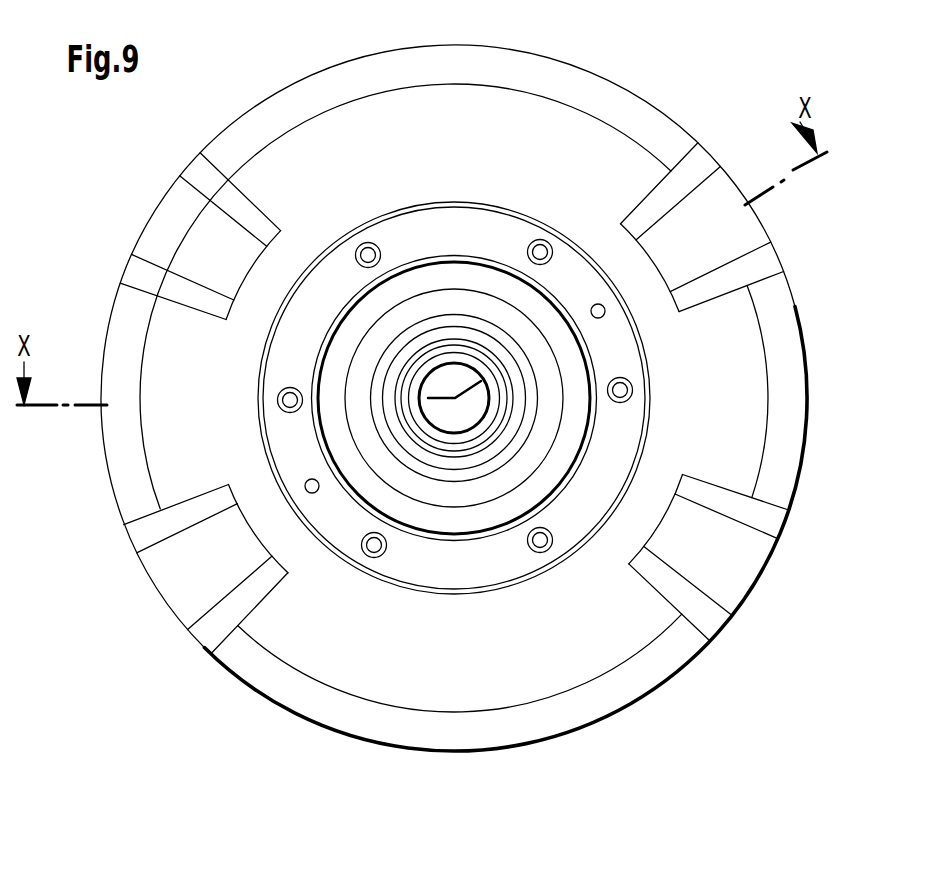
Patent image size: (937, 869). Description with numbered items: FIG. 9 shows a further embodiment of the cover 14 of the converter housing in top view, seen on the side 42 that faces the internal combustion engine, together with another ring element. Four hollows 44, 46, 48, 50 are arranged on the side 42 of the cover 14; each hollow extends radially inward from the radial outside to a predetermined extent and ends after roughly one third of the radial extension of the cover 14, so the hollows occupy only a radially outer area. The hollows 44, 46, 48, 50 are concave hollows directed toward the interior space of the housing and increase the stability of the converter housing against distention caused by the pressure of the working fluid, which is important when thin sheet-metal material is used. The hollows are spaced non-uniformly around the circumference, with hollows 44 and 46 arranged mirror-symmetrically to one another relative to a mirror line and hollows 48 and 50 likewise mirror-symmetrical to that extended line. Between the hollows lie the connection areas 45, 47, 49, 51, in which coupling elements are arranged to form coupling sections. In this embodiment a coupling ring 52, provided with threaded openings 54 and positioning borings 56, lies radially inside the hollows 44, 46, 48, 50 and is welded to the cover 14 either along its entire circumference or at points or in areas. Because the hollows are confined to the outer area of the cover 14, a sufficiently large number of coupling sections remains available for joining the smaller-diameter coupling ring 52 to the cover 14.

The cover 14 is at (810, 412).
The side of the cover facing the internal combustion engine 42 is at (447, 399).
The hollow 44 is at (180, 602).
The connection area 45 is at (163, 463).
The hollow 46 is at (162, 225).
The connection area 47 is at (393, 107).
The hollow 48 is at (758, 233).
The connection area 49 is at (747, 315).
The hollow 50 is at (750, 568).
The connection area 51 is at (628, 645).
The coupling ring 52 is at (507, 227).
The threaded opening 54 is at (363, 553).
The positioning boring 56 is at (305, 495).